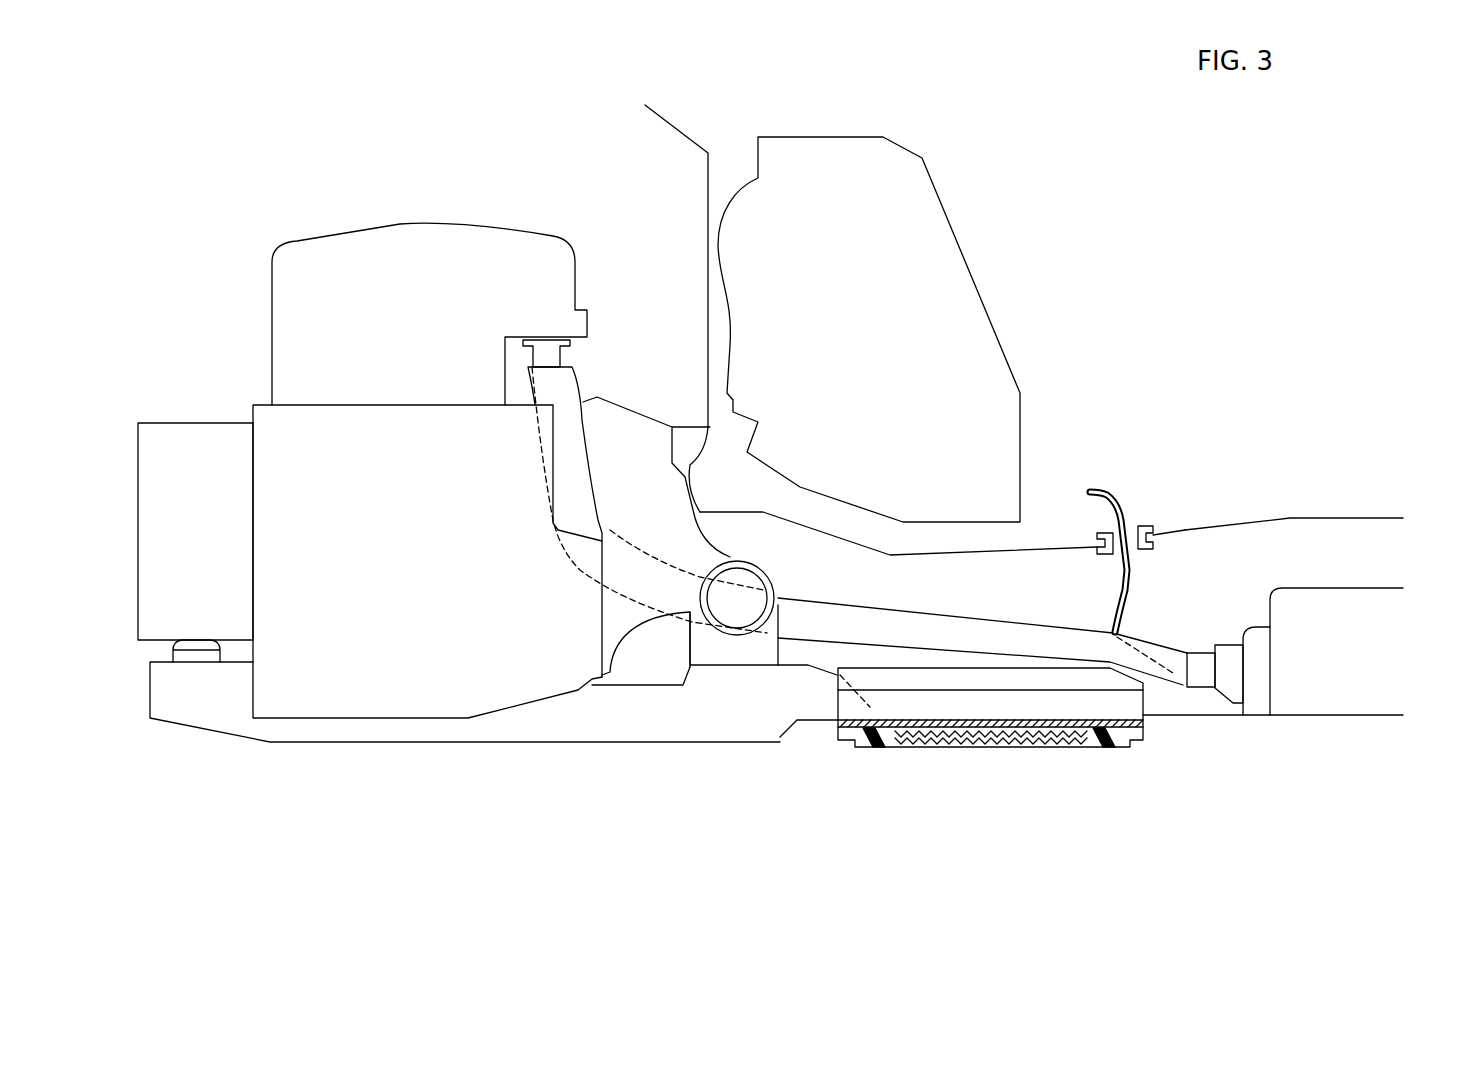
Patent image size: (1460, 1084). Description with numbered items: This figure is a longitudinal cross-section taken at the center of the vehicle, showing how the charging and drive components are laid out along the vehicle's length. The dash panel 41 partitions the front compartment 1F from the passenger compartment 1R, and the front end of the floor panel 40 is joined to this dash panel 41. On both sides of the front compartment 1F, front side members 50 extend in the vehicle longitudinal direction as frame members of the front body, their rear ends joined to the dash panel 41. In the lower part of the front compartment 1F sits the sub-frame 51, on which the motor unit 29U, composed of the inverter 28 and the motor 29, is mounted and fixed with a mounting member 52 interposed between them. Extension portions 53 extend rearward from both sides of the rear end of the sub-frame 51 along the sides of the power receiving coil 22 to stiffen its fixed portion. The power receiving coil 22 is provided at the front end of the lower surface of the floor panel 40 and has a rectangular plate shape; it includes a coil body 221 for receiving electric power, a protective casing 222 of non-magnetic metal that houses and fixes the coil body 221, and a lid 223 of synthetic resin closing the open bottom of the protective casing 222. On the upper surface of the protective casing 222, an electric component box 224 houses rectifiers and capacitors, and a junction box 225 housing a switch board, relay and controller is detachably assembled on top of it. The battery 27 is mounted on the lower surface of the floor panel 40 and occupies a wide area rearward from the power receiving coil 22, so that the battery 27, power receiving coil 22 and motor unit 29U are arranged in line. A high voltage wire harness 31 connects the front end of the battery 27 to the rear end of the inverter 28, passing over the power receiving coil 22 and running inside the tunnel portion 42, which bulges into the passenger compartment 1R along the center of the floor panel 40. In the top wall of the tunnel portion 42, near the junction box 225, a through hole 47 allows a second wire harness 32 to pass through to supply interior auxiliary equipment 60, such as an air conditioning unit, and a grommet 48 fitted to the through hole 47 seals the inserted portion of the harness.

The front compartment 1F is at (243, 197).
The passenger compartment 1R is at (1253, 396).
The interior auxiliary equipment 60 is at (938, 187).
The dash panel 41 is at (707, 292).
The motor unit 29U is at (429, 263).
The inverter 28 is at (308, 240).
The motor 29 is at (253, 410).
The front side member 50 is at (173, 423).
The wire harness 31 is at (577, 385).
The sub-frame 51 is at (428, 752).
The mounting member 52 is at (690, 640).
The extension portion 53 is at (817, 712).
The power receiving coil 22 is at (965, 762).
The coil body 221 is at (1000, 707).
The protective casing 222 is at (913, 720).
The lid 223 is at (1035, 745).
The electric component box 224 is at (1010, 750).
The junction box 225 is at (913, 667).
The floor panel 40 is at (1190, 728).
The wire harness 32 is at (1125, 503).
The through hole 47 is at (1133, 528).
The grommet 48 is at (1157, 527).
The tunnel portion 42 is at (1293, 518).
The battery 27 is at (1360, 580).